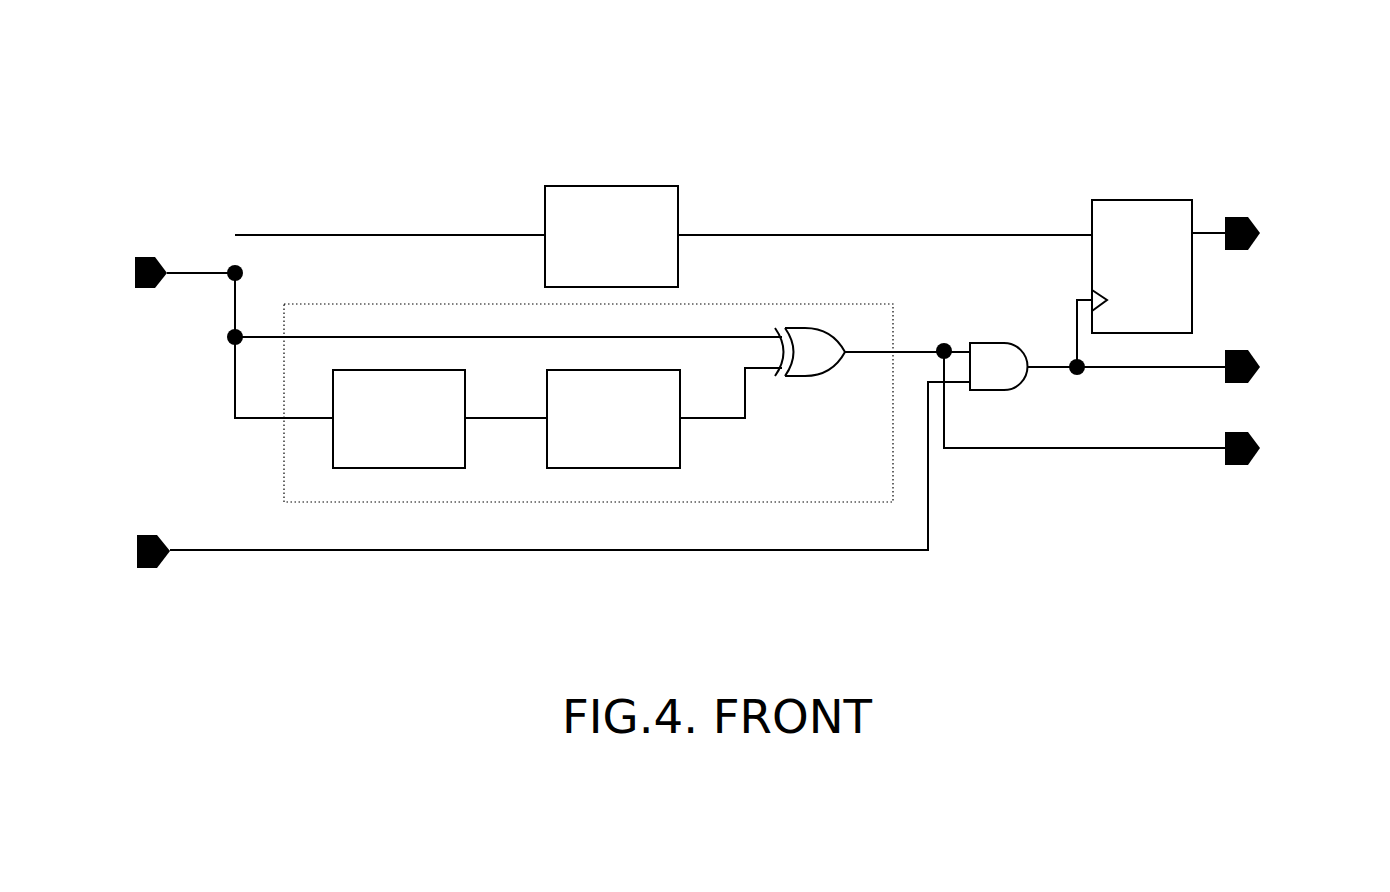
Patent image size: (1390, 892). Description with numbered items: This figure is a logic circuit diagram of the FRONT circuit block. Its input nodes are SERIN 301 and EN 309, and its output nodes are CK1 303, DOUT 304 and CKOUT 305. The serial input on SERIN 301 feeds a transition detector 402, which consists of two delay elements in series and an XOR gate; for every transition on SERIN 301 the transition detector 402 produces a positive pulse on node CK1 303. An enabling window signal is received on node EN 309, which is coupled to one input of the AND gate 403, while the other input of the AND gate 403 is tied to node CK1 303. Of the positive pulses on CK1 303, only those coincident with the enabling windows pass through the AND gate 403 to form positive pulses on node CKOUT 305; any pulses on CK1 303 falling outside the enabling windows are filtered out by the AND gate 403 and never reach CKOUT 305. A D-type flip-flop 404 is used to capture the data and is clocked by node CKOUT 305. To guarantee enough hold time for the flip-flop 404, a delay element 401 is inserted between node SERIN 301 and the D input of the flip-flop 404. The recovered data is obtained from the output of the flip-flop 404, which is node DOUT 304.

The SERIN node 301 is at (185, 273).
The CK1 node 303 is at (1128, 452).
The DOUT node 304 is at (1207, 233).
The CKOUT node 305 is at (1212, 367).
The EN node 309 is at (928, 492).
The delay element 401 is at (595, 186).
The transition detector 402 is at (317, 503).
The AND gate 403 is at (993, 350).
The flip-flop 404 is at (1125, 200).